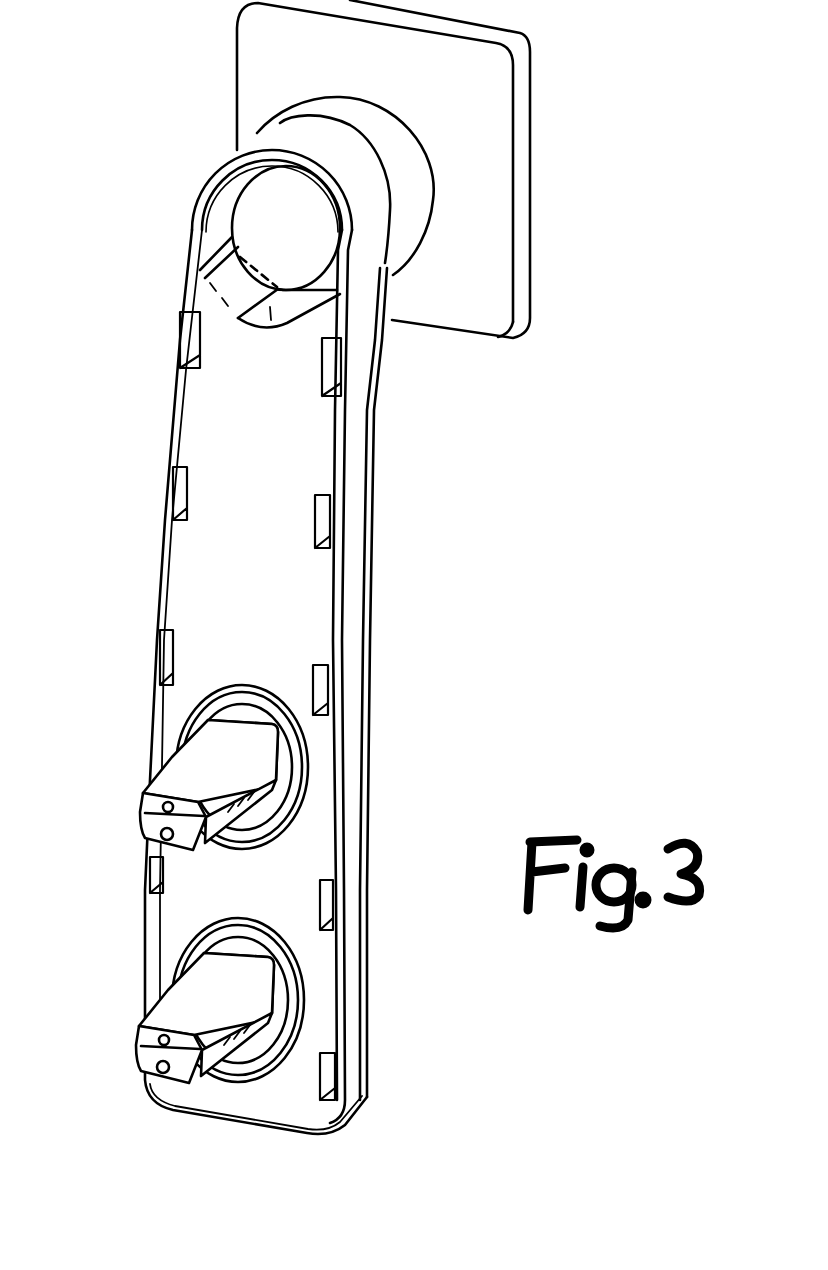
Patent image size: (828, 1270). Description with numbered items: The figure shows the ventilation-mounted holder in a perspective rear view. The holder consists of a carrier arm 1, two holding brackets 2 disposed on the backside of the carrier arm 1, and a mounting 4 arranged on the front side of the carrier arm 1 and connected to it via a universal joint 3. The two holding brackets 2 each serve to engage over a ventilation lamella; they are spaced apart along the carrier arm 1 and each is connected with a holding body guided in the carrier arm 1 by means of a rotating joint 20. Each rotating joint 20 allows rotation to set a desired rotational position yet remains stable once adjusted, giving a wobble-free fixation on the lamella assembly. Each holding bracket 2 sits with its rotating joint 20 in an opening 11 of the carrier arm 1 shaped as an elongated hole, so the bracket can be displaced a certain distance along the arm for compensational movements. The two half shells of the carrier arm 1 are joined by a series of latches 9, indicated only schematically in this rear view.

The carrier arm 1 is at (347, 570).
The holding bracket 2 is at (190, 770).
The universal joint 3 is at (402, 195).
The mounting 4 is at (495, 217).
The retaining tabs 9 is at (337, 370).
The opening 11 is at (225, 690).
The rotating joint 20 is at (290, 775).